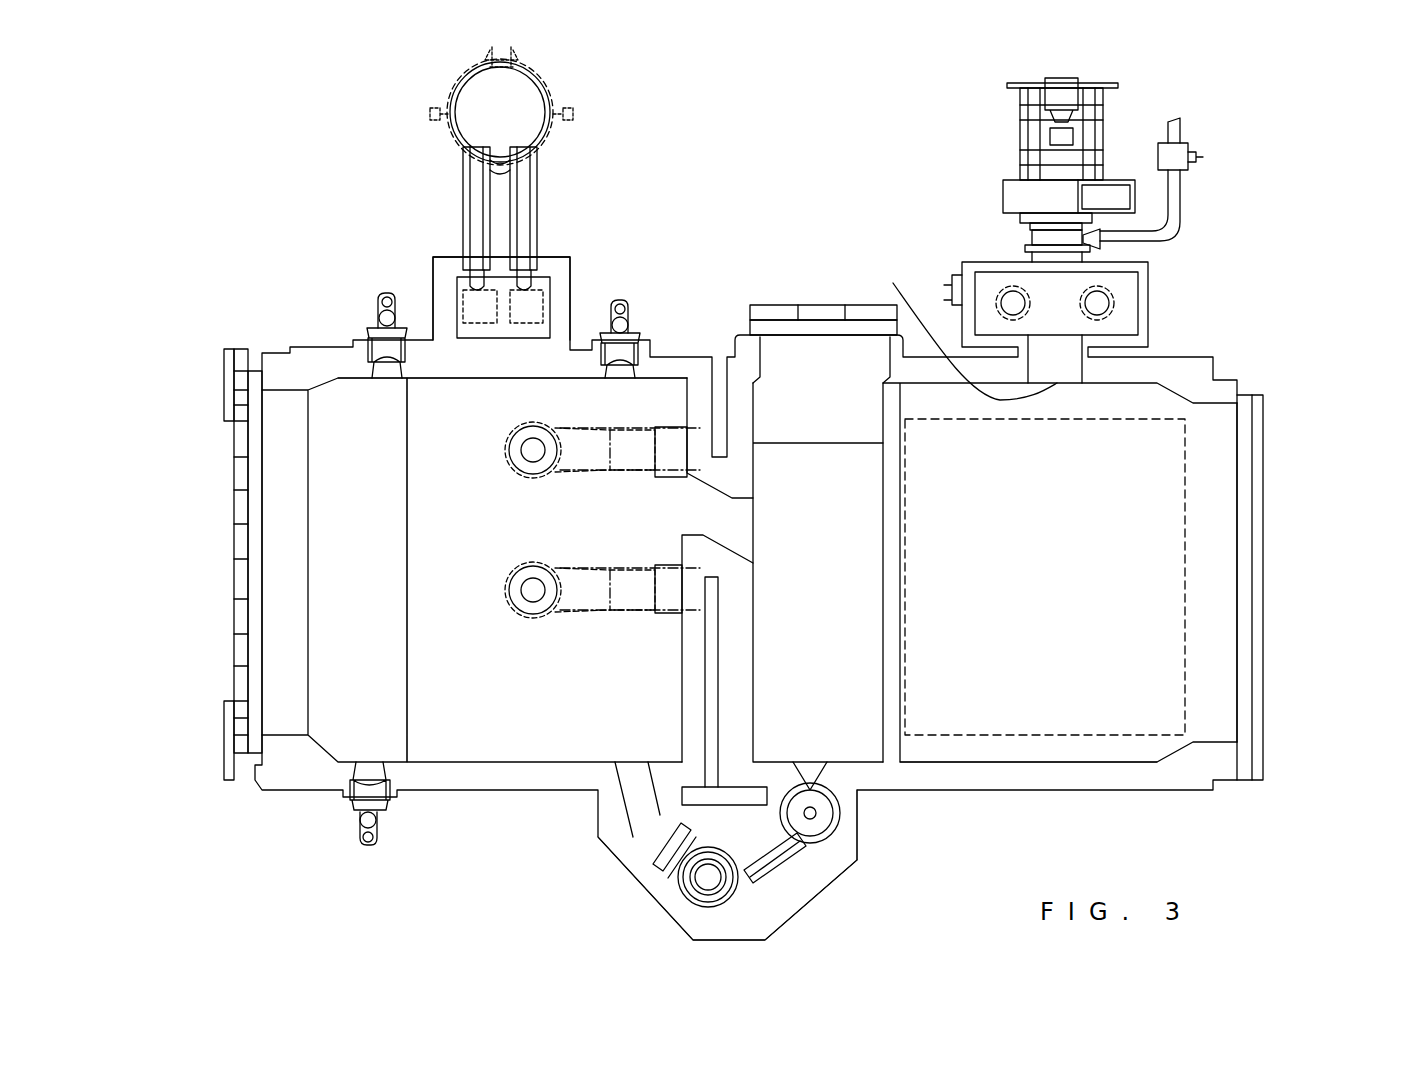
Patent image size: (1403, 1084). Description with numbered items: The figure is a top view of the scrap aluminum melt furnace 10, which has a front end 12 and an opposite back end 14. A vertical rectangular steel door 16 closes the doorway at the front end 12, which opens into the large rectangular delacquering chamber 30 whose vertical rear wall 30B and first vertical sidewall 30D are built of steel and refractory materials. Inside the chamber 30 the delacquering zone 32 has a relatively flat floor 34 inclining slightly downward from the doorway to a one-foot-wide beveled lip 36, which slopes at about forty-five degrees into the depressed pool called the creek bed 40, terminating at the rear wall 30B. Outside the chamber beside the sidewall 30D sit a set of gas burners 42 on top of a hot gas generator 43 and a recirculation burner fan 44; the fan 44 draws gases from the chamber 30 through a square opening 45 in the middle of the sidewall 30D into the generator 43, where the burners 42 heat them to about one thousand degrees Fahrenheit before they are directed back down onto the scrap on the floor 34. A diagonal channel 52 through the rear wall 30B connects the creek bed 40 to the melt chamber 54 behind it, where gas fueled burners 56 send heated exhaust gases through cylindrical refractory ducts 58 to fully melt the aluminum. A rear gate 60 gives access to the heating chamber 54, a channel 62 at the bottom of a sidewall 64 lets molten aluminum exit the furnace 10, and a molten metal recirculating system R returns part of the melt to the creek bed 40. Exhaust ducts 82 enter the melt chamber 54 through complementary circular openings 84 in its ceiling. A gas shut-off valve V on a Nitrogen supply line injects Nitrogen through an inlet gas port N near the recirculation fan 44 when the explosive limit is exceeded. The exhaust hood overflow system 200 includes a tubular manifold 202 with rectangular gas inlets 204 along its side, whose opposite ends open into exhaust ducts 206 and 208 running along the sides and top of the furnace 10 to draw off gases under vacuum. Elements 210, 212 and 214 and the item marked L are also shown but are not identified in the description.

The furnace 10 is at (822, 183).
The front end 12 is at (1188, 158).
The back end 14 is at (362, 178).
The door 16 is at (1242, 538).
The delacquering chamber 30 is at (1262, 383).
The vertical rear wall 30B is at (753, 600).
The first vertical sidewall 30D is at (1140, 383).
The delacquering zone 32 is at (1135, 483).
The floor 34 is at (1143, 650).
The beveled lip 36 is at (884, 683).
The creek bed 40 is at (822, 634).
The gas burners 42 is at (1005, 295).
The hot gas generator 43 is at (1150, 290).
The recirculation burner fan 44 is at (1125, 107).
The square opening 45 is at (957, 326).
The diagonal channel 52 is at (702, 518).
The melt chamber 54 is at (633, 396).
The gas fueled burners 56 is at (385, 298).
The cylindrical refractory ducts 58 is at (385, 367).
The rear gate 60 is at (233, 565).
The channel 62 is at (500, 357).
The sidewall 64 is at (740, 330).
The exhaust ducts 82 is at (600, 555).
The circular openings 84 is at (497, 462).
The exhaust hood overflow system 200 is at (751, 858).
The manifold 202 is at (745, 940).
The gas inlets 204 is at (638, 800).
The exhaust duct 206 is at (697, 870).
The exhaust duct 208 is at (790, 890).
The pivot 210 is at (820, 830).
The mount 212 is at (860, 757).
The arm 214 is at (625, 768).
The inlet gas port N is at (1080, 237).
The gas shut-off valve V is at (1180, 150).
The line L is at (1180, 200).
The molten metal recirculating system R is at (878, 860).